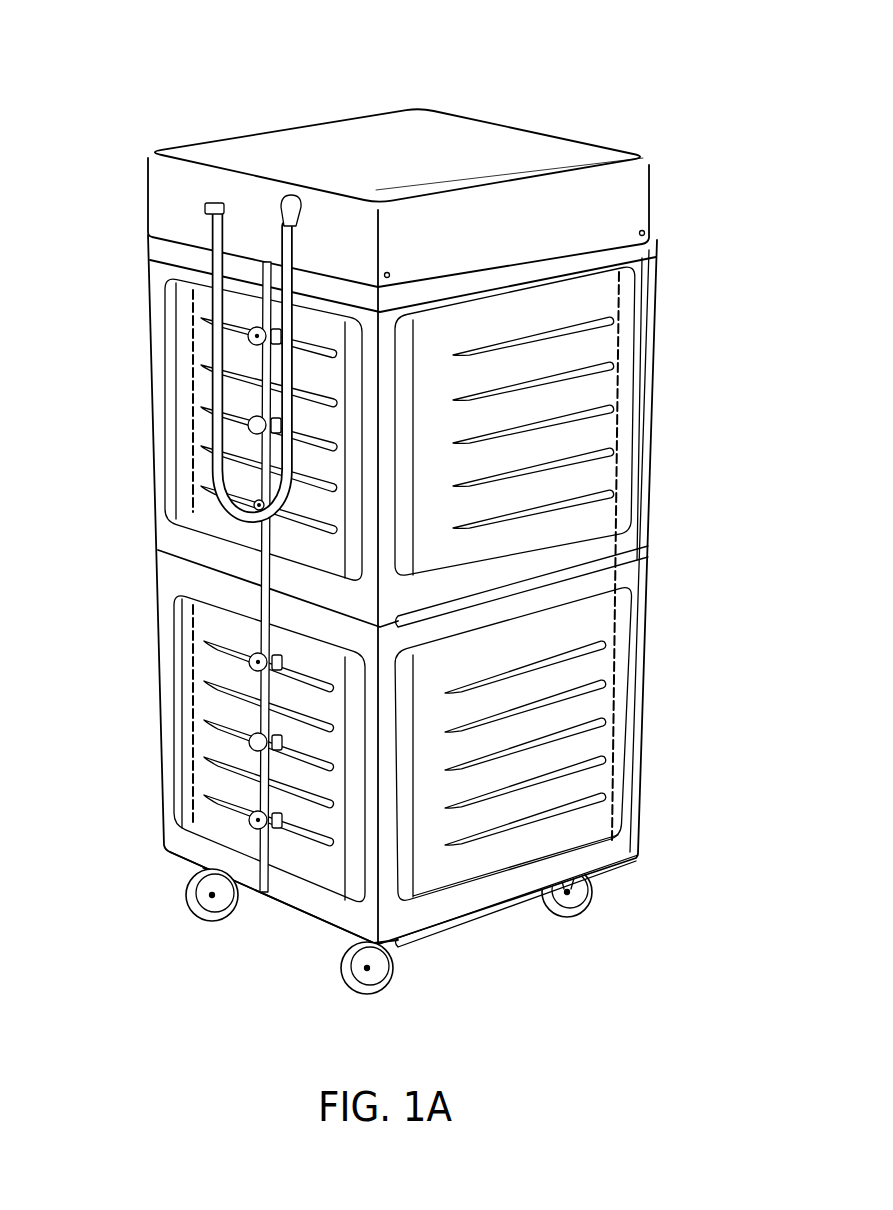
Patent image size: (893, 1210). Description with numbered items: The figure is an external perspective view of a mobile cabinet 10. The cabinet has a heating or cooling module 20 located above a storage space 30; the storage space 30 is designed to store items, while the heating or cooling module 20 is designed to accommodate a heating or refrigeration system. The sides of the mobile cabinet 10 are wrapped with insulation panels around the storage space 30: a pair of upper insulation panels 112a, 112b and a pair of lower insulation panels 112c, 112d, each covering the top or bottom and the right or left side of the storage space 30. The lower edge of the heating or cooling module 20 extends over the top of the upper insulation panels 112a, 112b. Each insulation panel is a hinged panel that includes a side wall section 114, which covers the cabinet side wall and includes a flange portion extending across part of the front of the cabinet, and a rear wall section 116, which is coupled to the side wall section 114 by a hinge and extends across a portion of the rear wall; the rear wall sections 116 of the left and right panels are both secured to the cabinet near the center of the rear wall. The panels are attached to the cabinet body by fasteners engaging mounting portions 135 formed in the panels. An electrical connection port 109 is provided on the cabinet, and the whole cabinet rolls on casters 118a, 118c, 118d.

The mobile cabinet 10 is at (170, 47).
The heating or cooling module 20 is at (343, 137).
The storage space 30 is at (690, 732).
The electrical connection port 109 is at (215, 200).
The upper insulation panel 112a is at (657, 345).
The upper insulation panel 112b is at (150, 265).
The lower insulation panel 112c is at (650, 618).
The lower insulation panel 112d is at (165, 778).
The side wall section 114 is at (592, 388).
The rear wall section 116 is at (332, 870).
The caster 118a is at (590, 896).
The caster 118c is at (357, 980).
The caster 118d is at (198, 906).
The mounting portion 135 is at (260, 660).